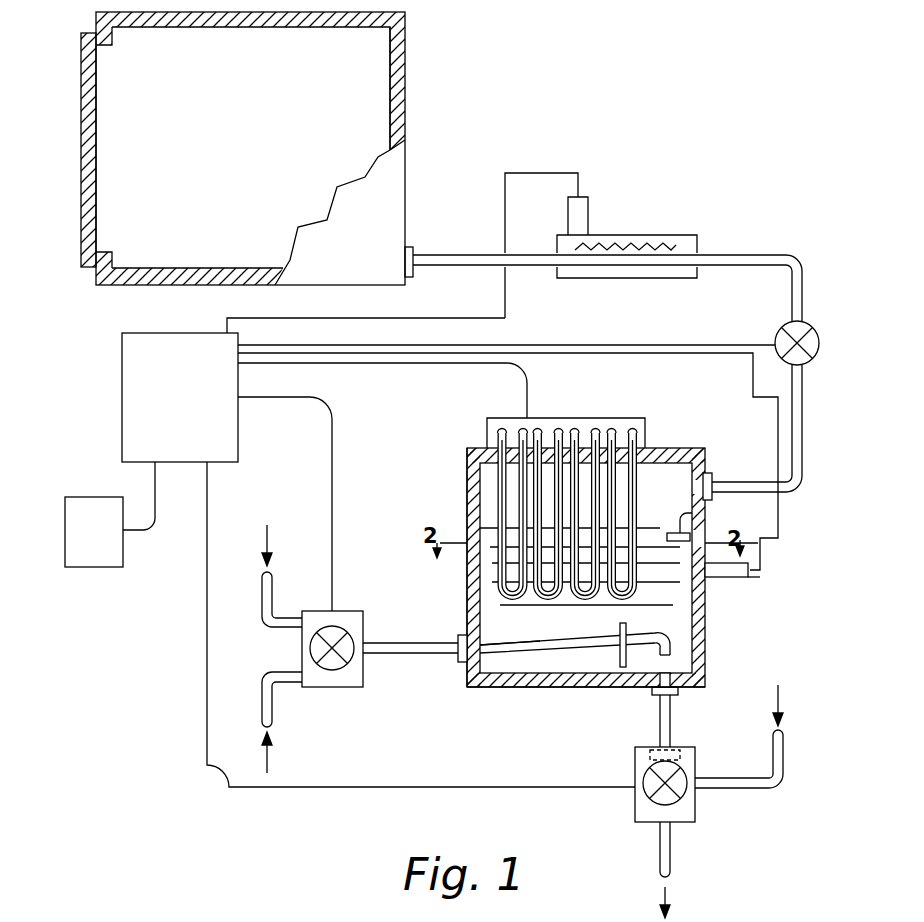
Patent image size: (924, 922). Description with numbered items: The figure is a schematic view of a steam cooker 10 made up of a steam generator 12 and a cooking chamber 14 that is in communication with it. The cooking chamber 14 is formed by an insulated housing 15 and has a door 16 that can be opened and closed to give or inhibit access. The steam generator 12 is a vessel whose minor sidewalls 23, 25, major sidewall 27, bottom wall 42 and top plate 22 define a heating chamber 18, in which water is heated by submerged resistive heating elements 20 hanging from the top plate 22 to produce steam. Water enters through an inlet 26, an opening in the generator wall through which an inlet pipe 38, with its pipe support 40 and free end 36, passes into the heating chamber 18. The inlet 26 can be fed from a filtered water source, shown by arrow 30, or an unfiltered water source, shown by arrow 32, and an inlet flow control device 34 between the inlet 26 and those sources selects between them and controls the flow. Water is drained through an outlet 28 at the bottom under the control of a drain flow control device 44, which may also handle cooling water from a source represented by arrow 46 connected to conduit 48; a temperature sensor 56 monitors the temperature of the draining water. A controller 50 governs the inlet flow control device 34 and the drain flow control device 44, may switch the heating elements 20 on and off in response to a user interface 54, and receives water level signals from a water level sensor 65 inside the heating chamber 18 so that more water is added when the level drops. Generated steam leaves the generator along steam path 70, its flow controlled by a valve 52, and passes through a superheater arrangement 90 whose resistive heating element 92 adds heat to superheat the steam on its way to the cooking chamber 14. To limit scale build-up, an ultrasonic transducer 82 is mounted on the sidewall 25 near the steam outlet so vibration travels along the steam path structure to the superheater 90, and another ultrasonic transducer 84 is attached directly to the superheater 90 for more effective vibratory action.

The steam cooker 10 is at (637, 118).
The steam generator 12 is at (470, 563).
The cooking chamber 14 is at (300, 103).
The insulated housing 15 is at (405, 107).
The door 16 is at (80, 108).
The heating chamber 18 is at (645, 498).
The resistive heating elements 20 is at (472, 493).
The top plate 22 is at (472, 445).
The minor sidewall 23 is at (472, 530).
The minor sidewall 25 is at (760, 557).
The inlet 26 is at (457, 652).
The major sidewall 27 is at (675, 485).
The outlet 28 is at (675, 678).
The filtered water source 30 is at (267, 540).
The unfiltered water source 32 is at (267, 763).
The inlet flow control device 34 is at (338, 687).
The free end 36 is at (673, 630).
The inlet pipe 38 is at (578, 648).
The pipe support 40 is at (623, 667).
The bottom wall 42 is at (545, 655).
The drain flow control device 44 is at (638, 810).
The cooling water source 46 is at (780, 702).
The conduit 48 is at (748, 787).
The controller 50 is at (122, 413).
The valve 52 is at (770, 318).
The user interface 54 is at (100, 567).
The temperature sensor 56 is at (677, 742).
The water level sensor 65 is at (680, 510).
The steam path 70 is at (735, 258).
The ultrasonic transducer 82 is at (776, 597).
The ultrasonic transducer 84 is at (590, 208).
The superheater arrangement 90 is at (688, 233).
The resistive heating element 92 is at (618, 243).